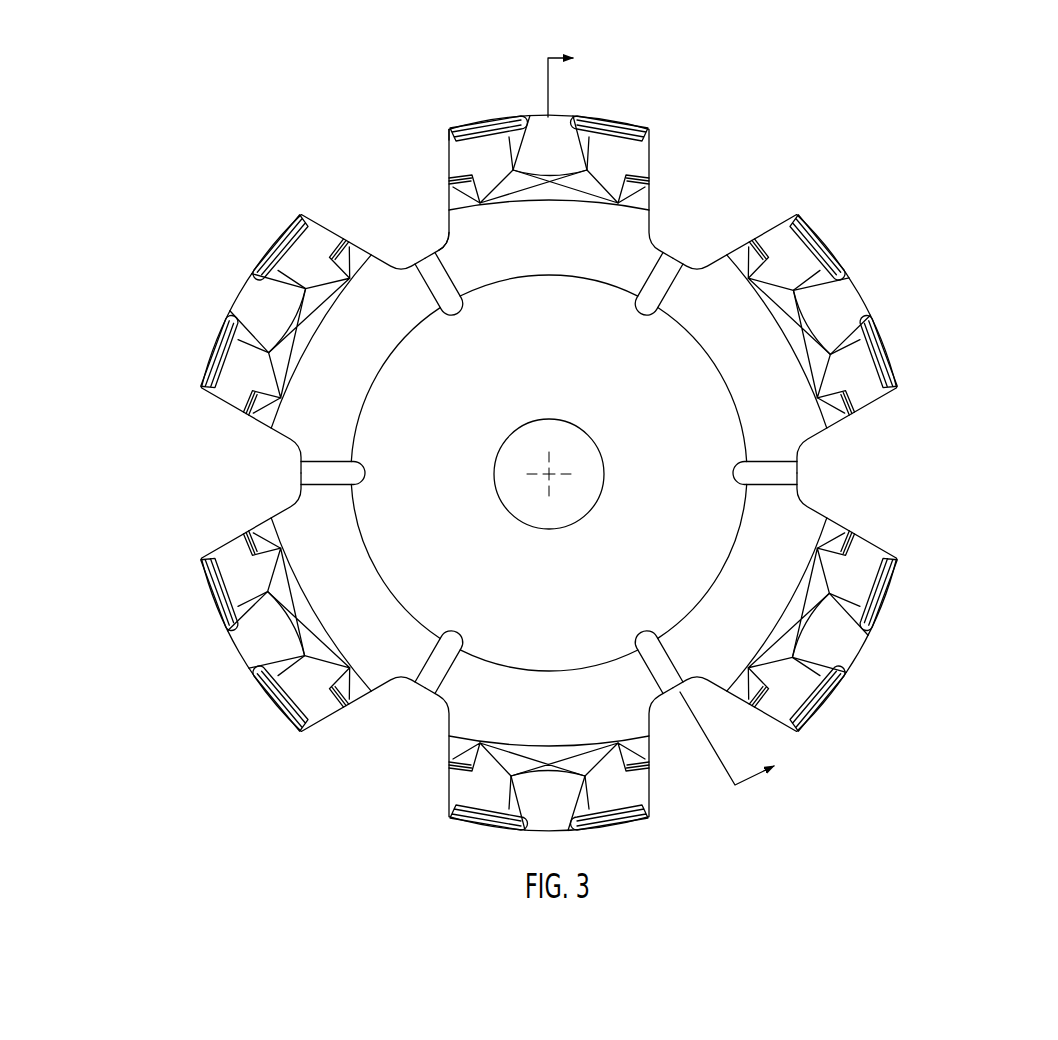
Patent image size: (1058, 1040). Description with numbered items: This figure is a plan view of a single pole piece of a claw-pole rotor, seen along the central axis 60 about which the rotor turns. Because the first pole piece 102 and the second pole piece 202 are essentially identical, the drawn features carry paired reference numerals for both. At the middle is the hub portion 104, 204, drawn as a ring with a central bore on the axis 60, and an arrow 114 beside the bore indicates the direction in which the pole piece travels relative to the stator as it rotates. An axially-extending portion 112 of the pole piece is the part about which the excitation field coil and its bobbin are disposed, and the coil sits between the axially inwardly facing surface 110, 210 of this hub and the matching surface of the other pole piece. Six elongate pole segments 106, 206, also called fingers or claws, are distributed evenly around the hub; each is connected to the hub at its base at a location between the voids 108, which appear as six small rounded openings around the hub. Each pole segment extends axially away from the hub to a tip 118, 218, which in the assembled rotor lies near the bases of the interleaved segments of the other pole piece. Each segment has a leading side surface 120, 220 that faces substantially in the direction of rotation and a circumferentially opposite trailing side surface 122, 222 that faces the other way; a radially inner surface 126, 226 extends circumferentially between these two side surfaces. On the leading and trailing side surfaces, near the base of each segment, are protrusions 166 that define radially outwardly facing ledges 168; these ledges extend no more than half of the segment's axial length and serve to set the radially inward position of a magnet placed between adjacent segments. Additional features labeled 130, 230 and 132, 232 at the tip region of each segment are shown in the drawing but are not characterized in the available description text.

The central axis 60 is at (550, 476).
The first pole piece 102 is at (497, 419).
The second pole piece 202 is at (278, 76).
The hub portion 104 is at (549, 528).
The hub portion 204 is at (549, 528).
The first pole segments 106 is at (497, 423).
The second pole segments 206 is at (497, 423).
The voids 108 is at (285, 442).
The axially inwardly facing surface 110 is at (549, 473).
The axially inwardly facing surface 210 is at (398, 638).
The axially-extending portion 112 is at (283, 513).
The arrow 114 is at (503, 412).
The tip 118 is at (382, 366).
The tip 218 is at (533, 117).
The leading side surface 120 is at (451, 406).
The leading side surface 220 is at (603, 157).
The trailing side surface 122 is at (339, 478).
The trailing side surface 222 is at (493, 162).
The radially inner surface 126 is at (476, 392).
The radially inner surface 226 is at (533, 188).
The outer cutting insert 130 is at (419, 324).
The outer cutting insert (second embodiment) 230 is at (654, 130).
The outer cutting insert 132 is at (388, 428).
The outer cutting insert (second embodiment) 232 is at (437, 131).
The protrusions 166 is at (381, 243).
The radially outwardly facing ledges 168 is at (340, 256).